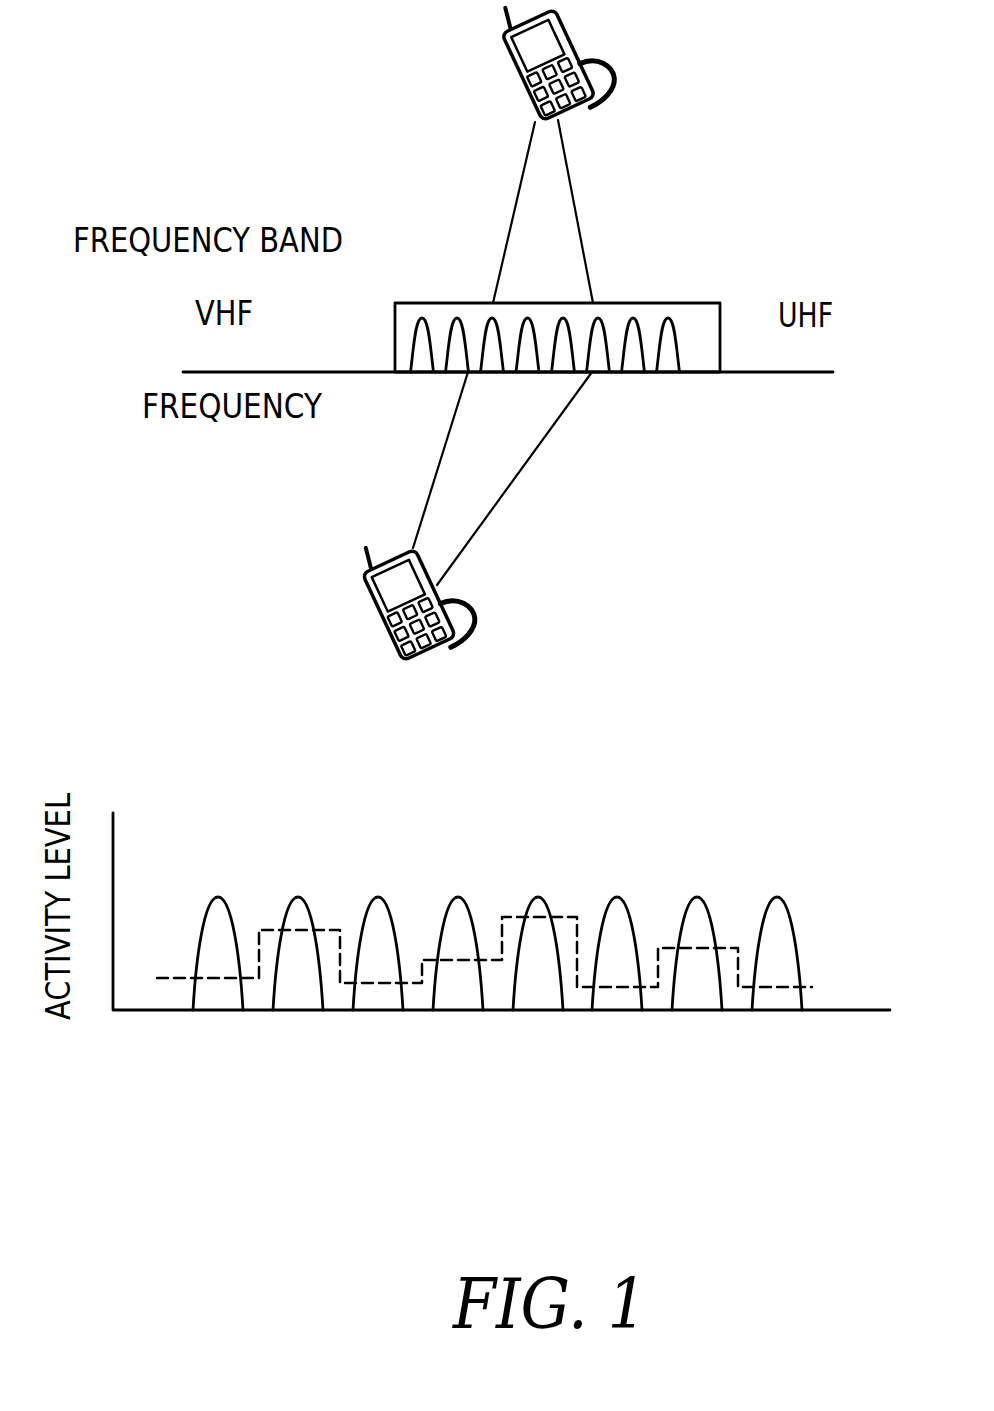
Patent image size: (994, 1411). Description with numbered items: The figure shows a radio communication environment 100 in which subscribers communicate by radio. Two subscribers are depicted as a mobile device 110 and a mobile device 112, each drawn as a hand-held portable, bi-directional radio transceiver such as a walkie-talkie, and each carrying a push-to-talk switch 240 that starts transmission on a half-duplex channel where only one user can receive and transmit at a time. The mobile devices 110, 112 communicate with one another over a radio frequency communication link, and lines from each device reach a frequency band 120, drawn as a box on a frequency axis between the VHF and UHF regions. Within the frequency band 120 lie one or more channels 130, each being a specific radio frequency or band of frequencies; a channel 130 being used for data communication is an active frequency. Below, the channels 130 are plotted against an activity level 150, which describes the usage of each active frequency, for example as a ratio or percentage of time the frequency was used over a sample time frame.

The radio communication environment 100 is at (917, 1200).
The mobile device 110 is at (382, 617).
The mobile device 112 is at (522, 77).
The frequency band 120 is at (695, 303).
The channels 130 is at (670, 373).
The activity level 150 is at (818, 989).
The push-to-talk switch 240 is at (617, 80).